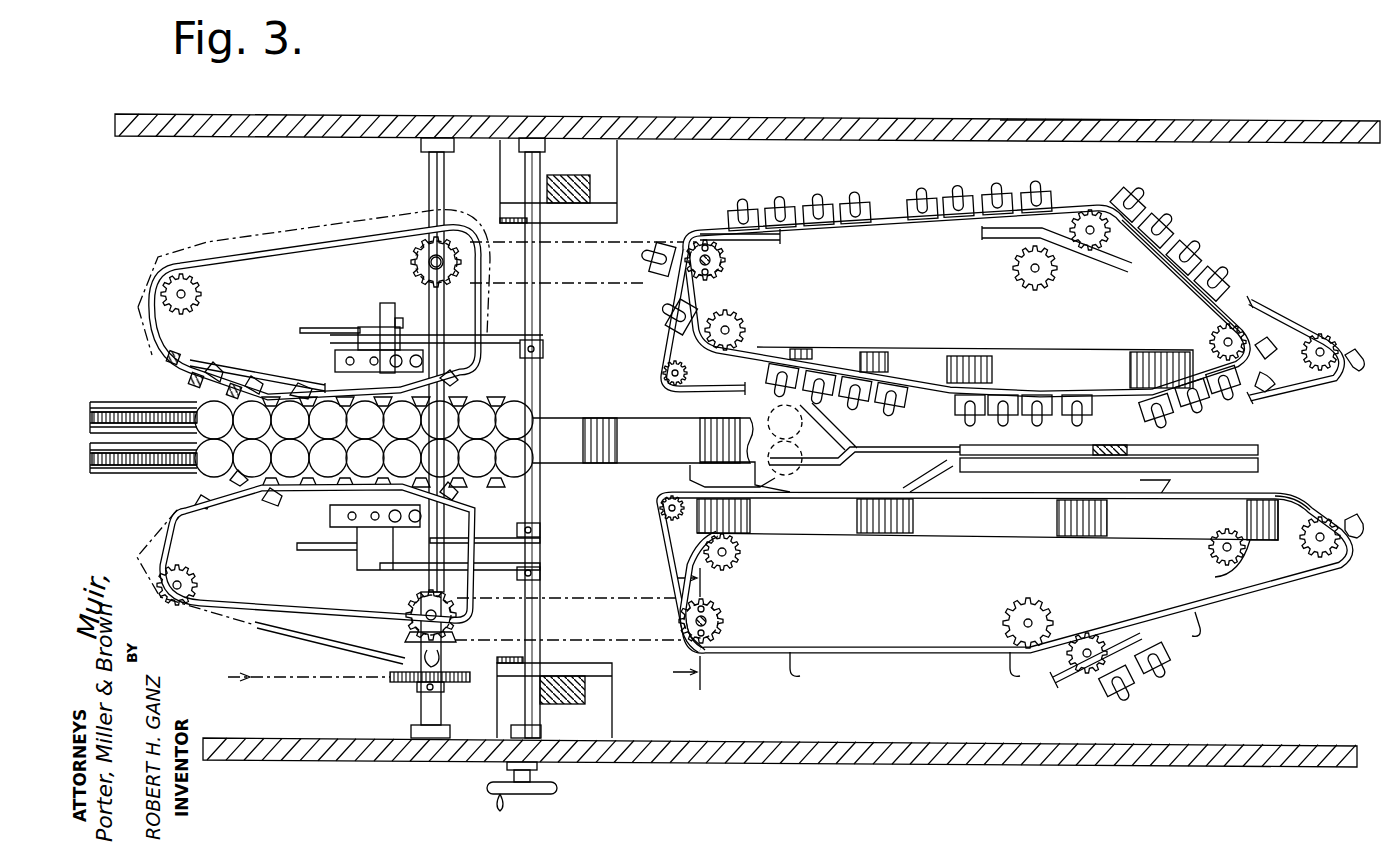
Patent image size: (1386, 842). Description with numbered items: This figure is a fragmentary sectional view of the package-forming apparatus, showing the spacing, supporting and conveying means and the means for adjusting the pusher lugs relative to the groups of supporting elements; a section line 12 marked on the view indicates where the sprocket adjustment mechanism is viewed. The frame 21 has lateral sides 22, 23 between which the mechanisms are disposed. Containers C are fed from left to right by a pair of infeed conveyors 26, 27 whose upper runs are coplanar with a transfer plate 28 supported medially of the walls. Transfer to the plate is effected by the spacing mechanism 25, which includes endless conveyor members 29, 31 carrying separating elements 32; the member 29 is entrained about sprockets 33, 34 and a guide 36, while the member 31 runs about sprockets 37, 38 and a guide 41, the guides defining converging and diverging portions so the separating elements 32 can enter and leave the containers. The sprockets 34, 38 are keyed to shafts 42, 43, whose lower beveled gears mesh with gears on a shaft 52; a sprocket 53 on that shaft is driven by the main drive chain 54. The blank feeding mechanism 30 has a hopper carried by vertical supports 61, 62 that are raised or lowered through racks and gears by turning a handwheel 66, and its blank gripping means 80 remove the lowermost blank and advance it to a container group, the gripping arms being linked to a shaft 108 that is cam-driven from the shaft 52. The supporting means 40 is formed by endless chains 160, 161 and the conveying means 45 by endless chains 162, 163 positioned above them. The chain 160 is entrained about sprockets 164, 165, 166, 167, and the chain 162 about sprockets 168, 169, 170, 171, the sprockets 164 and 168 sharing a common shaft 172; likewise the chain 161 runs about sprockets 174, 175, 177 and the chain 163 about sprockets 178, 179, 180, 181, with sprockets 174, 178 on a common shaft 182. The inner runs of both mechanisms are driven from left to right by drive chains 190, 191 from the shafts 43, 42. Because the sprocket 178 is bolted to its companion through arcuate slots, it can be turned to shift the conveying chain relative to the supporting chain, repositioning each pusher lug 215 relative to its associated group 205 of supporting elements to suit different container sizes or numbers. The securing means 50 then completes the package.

The frame 21 is at (1092, 118).
The lateral side 22 is at (846, 117).
The lateral side 23 is at (701, 764).
The spacing mechanism 25 is at (308, 220).
The infeed conveyor 26 is at (120, 410).
The infeed conveyor 27 is at (138, 455).
The transfer plate 28 is at (633, 465).
The endless conveyor member 29 is at (314, 282).
The blank feeding mechanism 30 is at (358, 565).
The endless conveyor member 31 is at (265, 623).
The separating elements 32 is at (215, 373).
The sprocket 33 is at (180, 275).
The sprocket 34 is at (414, 262).
The guide 36 is at (260, 381).
The sprocket 37 is at (178, 605).
The sprocket 38 is at (410, 616).
The supporting means 40 is at (1200, 224).
The guide 41 is at (270, 492).
The shaft 42 is at (439, 258).
The shaft 43 is at (420, 625).
The conveying means 45 is at (892, 666).
The securing means 50 is at (942, 445).
The shaft 52 is at (428, 170).
The sprocket 53 is at (405, 685).
The main drive chain 54 is at (340, 682).
The vertical support 61 is at (590, 190).
The vertical support 62 is at (580, 696).
The handwheel 66 is at (492, 790).
The blank gripping means 80 is at (374, 328).
The shaft 108 is at (564, 390).
The section line 12- 12 is at (701, 629).
The containers C is at (531, 420).
The endless chain 160 is at (900, 228).
The endless chain 161 is at (1068, 665).
The endless chain 162 is at (1288, 330).
The endless chain 163 is at (1298, 500).
The sprocket 164 is at (724, 285).
The sprocket 165 is at (744, 324).
The sprocket 166 is at (1212, 340).
The sprocket 167 is at (1090, 212).
The sprocket 168 is at (724, 270).
The sprocket 169 is at (662, 373).
The sprocket 170 is at (1320, 350).
The sprocket 171 is at (1039, 283).
The shaft 172 is at (712, 261).
The sprocket 174 is at (724, 617).
The sprocket 175 is at (741, 553).
The sprocket 177 is at (1082, 678).
The sprocket 178 is at (690, 640).
The sprocket 179 is at (693, 500).
The sprocket 180 is at (1322, 528).
The sprocket 181 is at (1065, 580).
The shaft 182 is at (690, 620).
The drive chain 190 is at (600, 580).
The drive chain 191 is at (626, 280).
The group of supporting elements 205 is at (1017, 184).
The pusher lug 215 is at (960, 523).